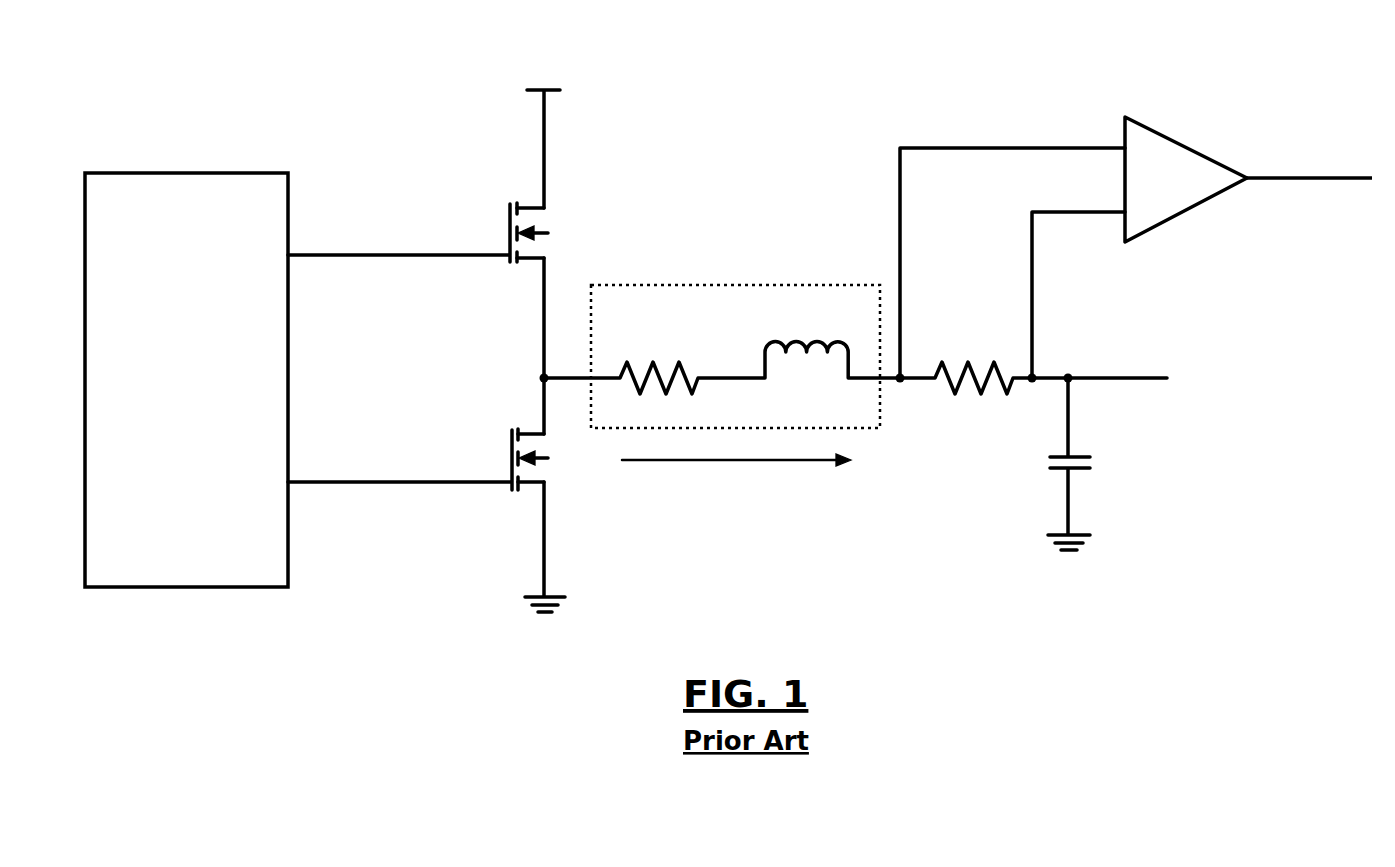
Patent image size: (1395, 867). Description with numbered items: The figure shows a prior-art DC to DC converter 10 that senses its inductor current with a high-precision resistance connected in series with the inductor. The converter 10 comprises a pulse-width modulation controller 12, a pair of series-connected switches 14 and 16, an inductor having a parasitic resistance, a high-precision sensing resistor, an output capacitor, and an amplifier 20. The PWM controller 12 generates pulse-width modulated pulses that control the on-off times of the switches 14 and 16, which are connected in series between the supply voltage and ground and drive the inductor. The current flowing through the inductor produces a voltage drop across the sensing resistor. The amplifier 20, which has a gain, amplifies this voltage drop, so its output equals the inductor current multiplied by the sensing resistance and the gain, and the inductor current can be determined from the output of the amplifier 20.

The converter 10 is at (306, 42).
The pulse-width modulation (PWM) controller 12 is at (190, 173).
The switch 14 is at (495, 183).
The switch 16 is at (507, 409).
The amplifier 20 is at (1178, 115).